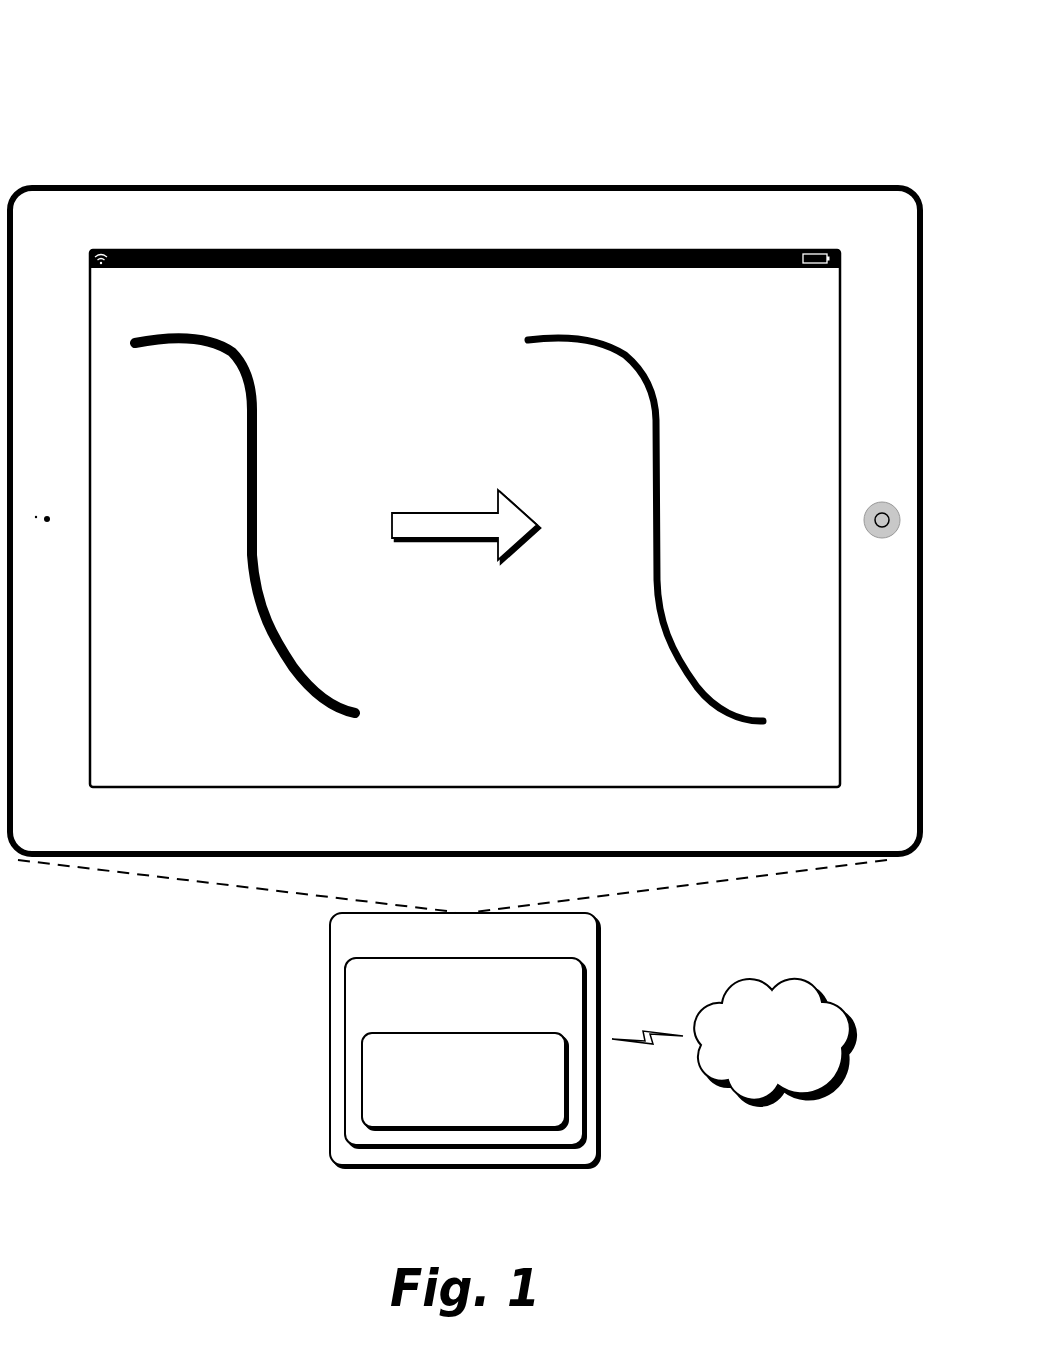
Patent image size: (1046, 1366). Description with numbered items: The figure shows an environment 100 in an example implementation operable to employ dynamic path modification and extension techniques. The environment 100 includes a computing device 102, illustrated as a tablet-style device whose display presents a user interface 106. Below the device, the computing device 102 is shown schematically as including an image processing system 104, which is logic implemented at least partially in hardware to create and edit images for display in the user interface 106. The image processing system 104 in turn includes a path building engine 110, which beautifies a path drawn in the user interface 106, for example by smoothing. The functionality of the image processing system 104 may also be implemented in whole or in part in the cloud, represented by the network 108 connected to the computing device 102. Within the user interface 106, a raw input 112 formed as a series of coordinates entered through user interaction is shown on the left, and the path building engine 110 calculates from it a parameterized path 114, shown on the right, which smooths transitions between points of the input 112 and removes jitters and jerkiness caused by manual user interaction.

The environment 100 is at (172, 63).
The computing device 102 is at (582, 949).
The image processing system 104 is at (525, 1019).
The user interface 106 is at (812, 309).
The network 108 is at (793, 1061).
The path building engine 110 is at (522, 1106).
The input 112 is at (267, 357).
The parameterized path 114 is at (681, 356).